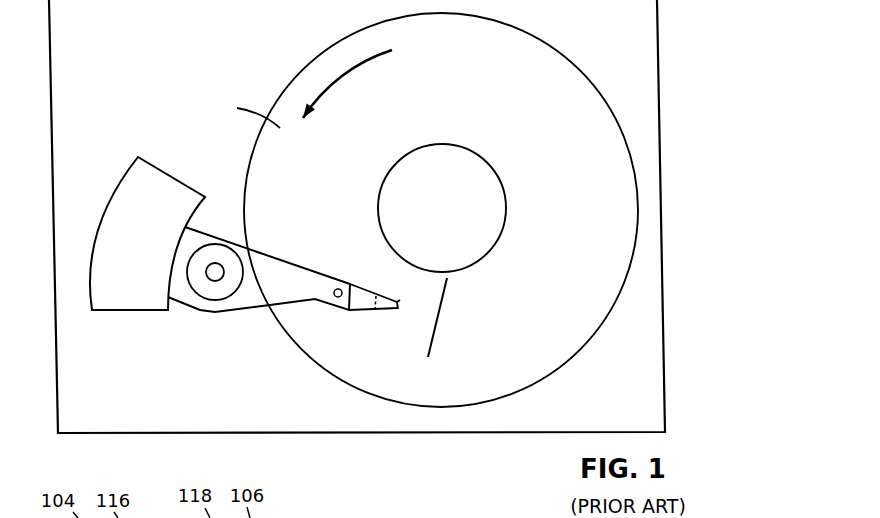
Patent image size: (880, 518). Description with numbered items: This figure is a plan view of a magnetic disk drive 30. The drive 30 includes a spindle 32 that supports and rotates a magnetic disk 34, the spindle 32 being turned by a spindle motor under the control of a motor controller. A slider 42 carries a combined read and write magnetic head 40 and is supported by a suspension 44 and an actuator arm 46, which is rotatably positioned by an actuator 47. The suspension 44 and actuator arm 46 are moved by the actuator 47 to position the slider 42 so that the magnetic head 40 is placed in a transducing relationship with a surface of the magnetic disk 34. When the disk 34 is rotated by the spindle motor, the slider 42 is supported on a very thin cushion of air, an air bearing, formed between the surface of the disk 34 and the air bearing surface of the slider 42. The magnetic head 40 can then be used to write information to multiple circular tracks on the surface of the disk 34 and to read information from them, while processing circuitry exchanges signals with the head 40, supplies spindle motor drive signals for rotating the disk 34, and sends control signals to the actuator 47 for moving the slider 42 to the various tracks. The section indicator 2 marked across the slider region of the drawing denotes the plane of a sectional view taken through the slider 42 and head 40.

The magnetic disk drive 30 is at (680, 30).
The spindle 32 is at (480, 153).
The magnetic disk 34 is at (558, 227).
The magnetic head 40 is at (400, 309).
The slider 42 is at (401, 300).
The suspension 44 is at (362, 312).
The actuator arm 46 is at (302, 270).
The actuator 47 is at (181, 183).
The section line 2- 2 is at (456, 289).